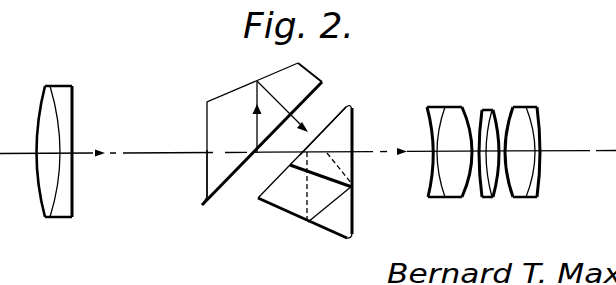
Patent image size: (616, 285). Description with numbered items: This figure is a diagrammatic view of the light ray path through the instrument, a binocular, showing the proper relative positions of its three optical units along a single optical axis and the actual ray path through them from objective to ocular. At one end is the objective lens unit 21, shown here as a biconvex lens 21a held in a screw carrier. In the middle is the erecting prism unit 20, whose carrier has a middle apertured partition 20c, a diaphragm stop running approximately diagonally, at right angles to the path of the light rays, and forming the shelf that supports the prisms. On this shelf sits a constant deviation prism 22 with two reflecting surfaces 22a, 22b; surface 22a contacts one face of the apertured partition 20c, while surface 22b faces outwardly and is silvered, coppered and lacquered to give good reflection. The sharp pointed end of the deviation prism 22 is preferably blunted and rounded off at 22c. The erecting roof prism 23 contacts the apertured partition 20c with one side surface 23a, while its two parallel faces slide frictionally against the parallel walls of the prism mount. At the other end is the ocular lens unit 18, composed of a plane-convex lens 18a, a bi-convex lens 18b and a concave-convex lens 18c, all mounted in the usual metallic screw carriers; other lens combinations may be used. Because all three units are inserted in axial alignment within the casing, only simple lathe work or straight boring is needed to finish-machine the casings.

The ocular lens unit 18 is at (506, 156).
The plane-convex lens 18a is at (548, 149).
The bi-convex lens 18b is at (492, 110).
The concave-convex lens 18c is at (443, 107).
The erecting prism unit 20 is at (295, 167).
The apertured partition 20c is at (239, 216).
The objective lens unit 21 is at (79, 164).
The biconvex lens 21a is at (63, 108).
The constant deviation prism 22 is at (293, 142).
The reflecting surface 22a is at (217, 193).
The reflecting surface 22b is at (281, 67).
The blunted rounded end 22c is at (332, 70).
The erecting roof prism 23 is at (330, 189).
The side surface 23a is at (354, 94).